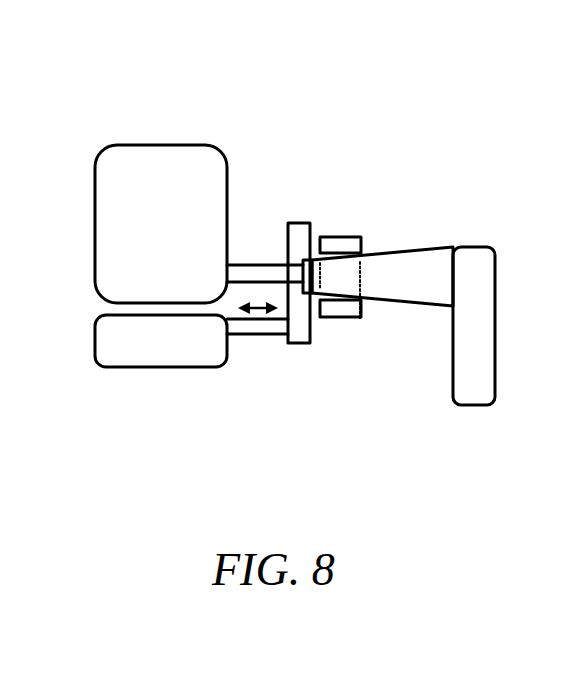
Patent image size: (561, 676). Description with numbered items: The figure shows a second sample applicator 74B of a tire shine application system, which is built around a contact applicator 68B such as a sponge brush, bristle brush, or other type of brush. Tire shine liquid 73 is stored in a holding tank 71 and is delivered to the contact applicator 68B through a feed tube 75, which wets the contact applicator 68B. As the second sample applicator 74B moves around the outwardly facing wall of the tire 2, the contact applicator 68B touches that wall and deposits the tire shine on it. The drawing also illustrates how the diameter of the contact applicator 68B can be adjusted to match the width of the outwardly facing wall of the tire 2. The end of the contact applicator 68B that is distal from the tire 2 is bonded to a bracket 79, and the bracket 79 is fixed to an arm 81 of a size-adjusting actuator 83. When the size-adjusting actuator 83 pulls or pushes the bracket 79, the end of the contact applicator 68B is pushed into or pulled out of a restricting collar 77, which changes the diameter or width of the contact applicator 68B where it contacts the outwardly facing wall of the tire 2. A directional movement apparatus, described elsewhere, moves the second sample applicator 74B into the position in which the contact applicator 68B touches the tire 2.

The tire 2 is at (470, 248).
The contact applicator 68B is at (400, 250).
The holding tank 71 is at (197, 145).
The tire shine liquid 73 is at (140, 250).
The second sample applicator 74B is at (402, 112).
The feed tube 75 is at (244, 265).
The restricting collar 77 is at (340, 238).
The bracket 79 is at (302, 343).
The arm 81 is at (247, 337).
The size-adjusting actuator 83 is at (172, 368).